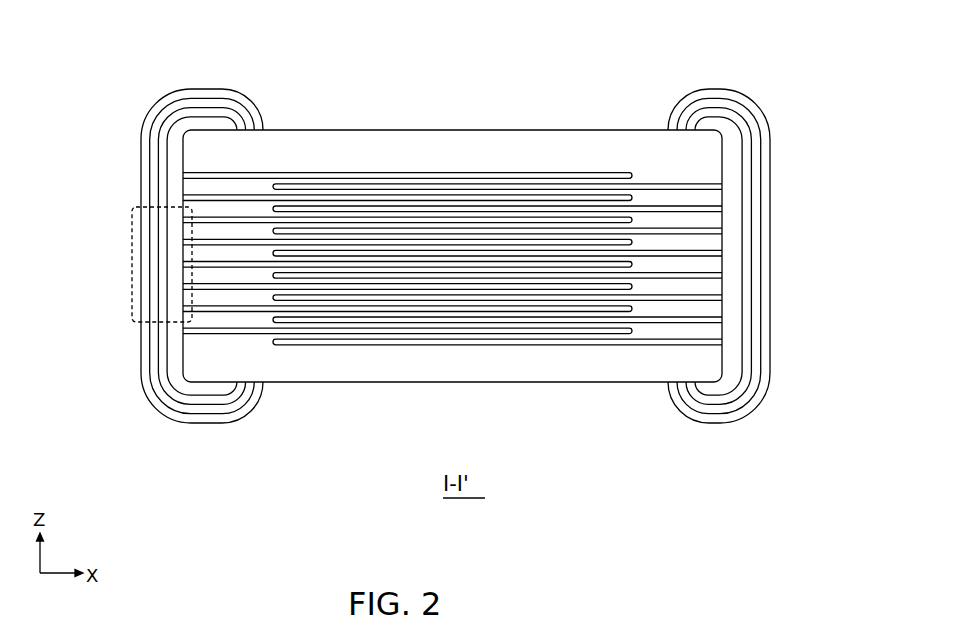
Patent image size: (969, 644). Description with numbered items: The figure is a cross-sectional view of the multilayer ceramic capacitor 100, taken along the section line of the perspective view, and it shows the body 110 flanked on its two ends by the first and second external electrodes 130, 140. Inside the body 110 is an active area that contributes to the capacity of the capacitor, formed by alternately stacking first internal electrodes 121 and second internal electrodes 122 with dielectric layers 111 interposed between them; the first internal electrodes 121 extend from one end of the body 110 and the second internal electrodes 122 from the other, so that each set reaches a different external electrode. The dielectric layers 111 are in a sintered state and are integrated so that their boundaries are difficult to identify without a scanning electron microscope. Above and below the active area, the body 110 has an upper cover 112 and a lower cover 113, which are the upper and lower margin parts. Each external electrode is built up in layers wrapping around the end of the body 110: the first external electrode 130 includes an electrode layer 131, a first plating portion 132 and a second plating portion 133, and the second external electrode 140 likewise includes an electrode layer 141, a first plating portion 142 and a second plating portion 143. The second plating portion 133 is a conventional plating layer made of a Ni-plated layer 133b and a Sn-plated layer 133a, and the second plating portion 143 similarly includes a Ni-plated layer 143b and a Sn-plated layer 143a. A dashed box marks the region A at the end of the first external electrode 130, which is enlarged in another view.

The multilayer ceramic capacitor 100 is at (340, 42).
The body 110 is at (448, 383).
The dielectric layer 111 is at (430, 181).
The upper cover 112 is at (583, 157).
The lower cover 113 is at (528, 370).
The first internal electrode 121 is at (378, 173).
The second internal electrode 122 is at (500, 189).
The first external electrode 130 is at (209, 332).
The electrode layer 131 is at (171, 342).
The first plating portion 132 is at (152, 397).
The second plating portion 133 is at (228, 312).
The Sn-plated layer 133a is at (207, 409).
The Ni-plated layer 133b is at (250, 405).
The second external electrode 140 is at (698, 332).
The electrode layer 141 is at (730, 338).
The first plating portion 142 is at (739, 391).
The second plating portion 143 is at (678, 312).
The Sn-plated layer 143a is at (690, 409).
The Ni-plated layer 143b is at (680, 403).
The region A is at (133, 270).